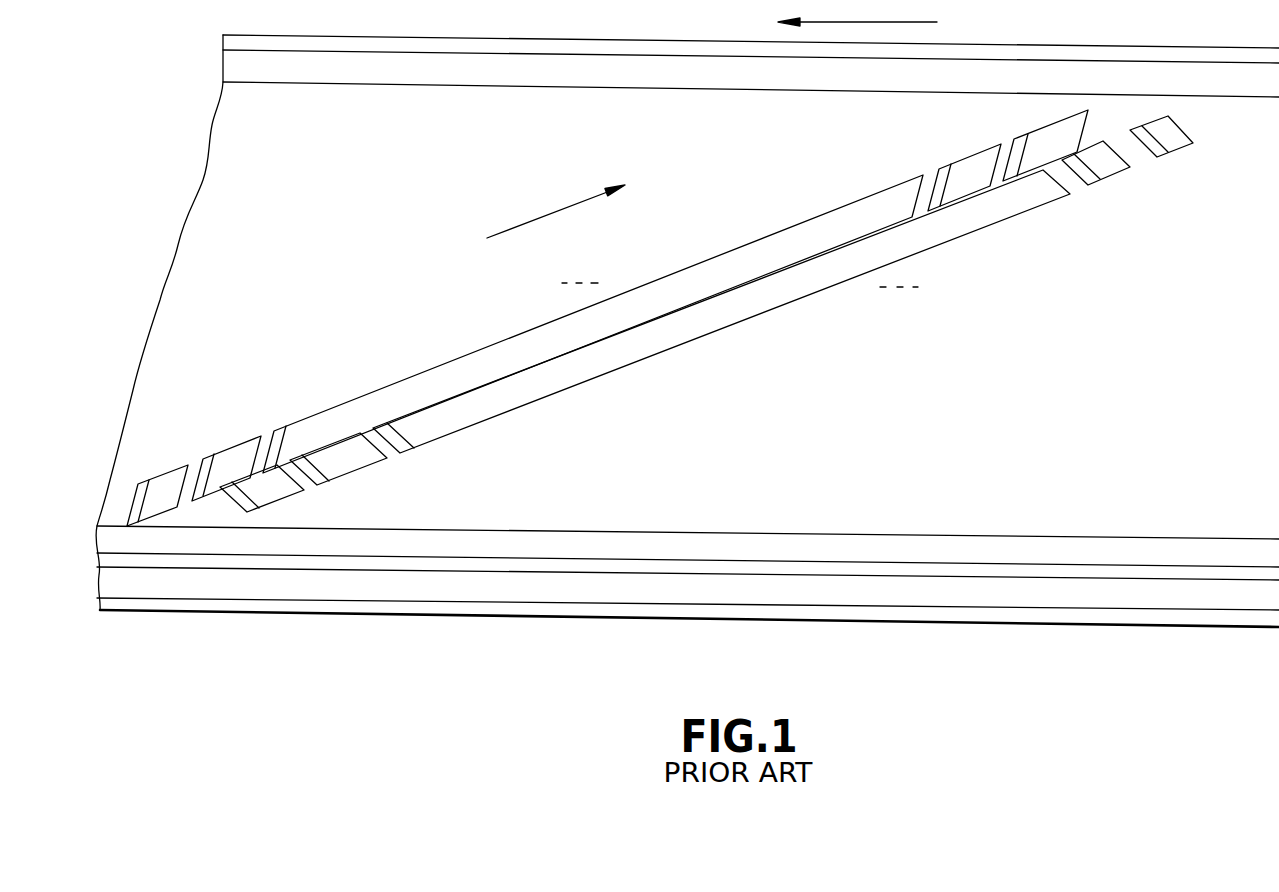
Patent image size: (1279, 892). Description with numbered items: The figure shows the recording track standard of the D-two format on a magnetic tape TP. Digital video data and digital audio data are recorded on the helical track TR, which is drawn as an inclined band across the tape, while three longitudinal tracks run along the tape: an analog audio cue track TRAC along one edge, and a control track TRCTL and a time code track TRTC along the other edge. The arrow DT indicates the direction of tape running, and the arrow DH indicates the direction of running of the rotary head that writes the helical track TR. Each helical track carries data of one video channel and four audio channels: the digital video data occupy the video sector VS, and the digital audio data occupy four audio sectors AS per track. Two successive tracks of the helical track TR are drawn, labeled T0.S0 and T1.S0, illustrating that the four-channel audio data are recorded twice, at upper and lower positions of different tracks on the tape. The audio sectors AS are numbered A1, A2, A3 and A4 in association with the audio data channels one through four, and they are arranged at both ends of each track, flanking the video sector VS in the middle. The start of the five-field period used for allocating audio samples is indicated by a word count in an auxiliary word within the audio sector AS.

The magnetic tape TP is at (1150, 105).
The analog audio cue track TRAC is at (751, 73).
The control track TRCTL is at (688, 546).
The time code track TRTC is at (688, 588).
The direction of tape running DT is at (857, 13).
The direction of running of rotary head DH is at (556, 211).
The video sector VS is at (652, 324).
The audio sector AS is at (660, 316).
The helical track TR is at (721, 311).
The track 0 segment 0 T0.S0 is at (593, 324).
The track 1 segment 0 T1.S0 is at (768, 408).
The audio sector for channel CH1 A1 is at (628, 333).
The audio sector for channel CH2 A2 is at (692, 308).
The audio sector for channel CH3 A3 is at (610, 328).
The audio sector for channel CH4 A4 is at (689, 297).